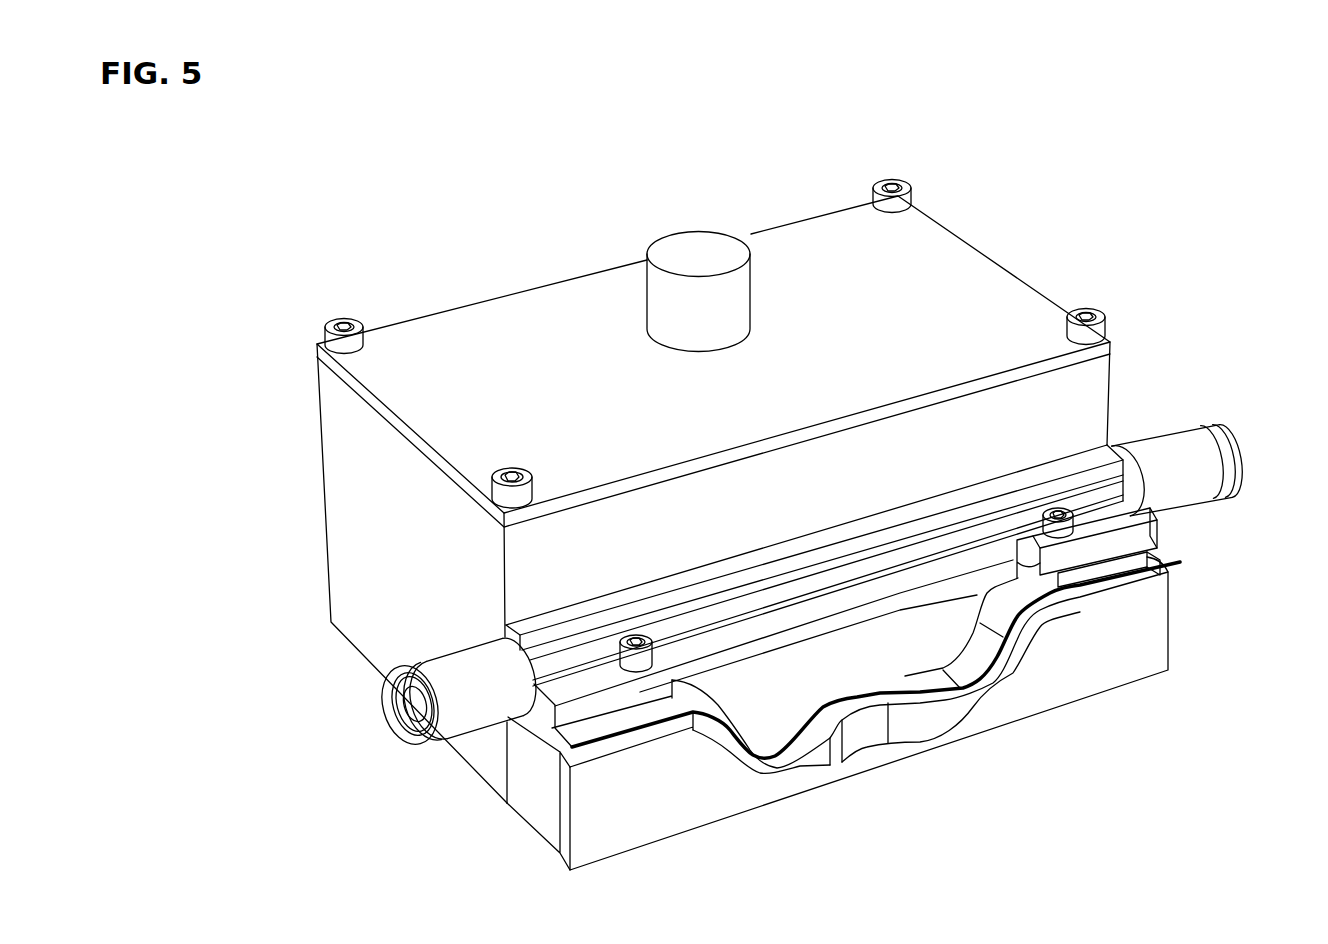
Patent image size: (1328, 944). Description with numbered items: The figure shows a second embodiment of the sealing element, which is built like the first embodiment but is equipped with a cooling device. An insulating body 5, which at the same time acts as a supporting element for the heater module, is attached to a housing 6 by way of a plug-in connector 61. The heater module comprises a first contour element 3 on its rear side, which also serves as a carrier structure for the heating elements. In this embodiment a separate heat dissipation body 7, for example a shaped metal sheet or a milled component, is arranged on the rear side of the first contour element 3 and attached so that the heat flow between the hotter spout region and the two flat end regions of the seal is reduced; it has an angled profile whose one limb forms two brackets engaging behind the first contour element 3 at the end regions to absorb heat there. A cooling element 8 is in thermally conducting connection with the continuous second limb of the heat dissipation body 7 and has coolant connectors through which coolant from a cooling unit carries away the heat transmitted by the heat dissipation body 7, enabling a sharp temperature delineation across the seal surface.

The first contour element 3 is at (1100, 681).
The insulating body 5 is at (937, 644).
The housing 6 is at (1069, 403).
The plug-in connector 61 is at (701, 230).
The heat dissipation body 7 is at (1114, 576).
The cooling element 8 is at (1092, 502).